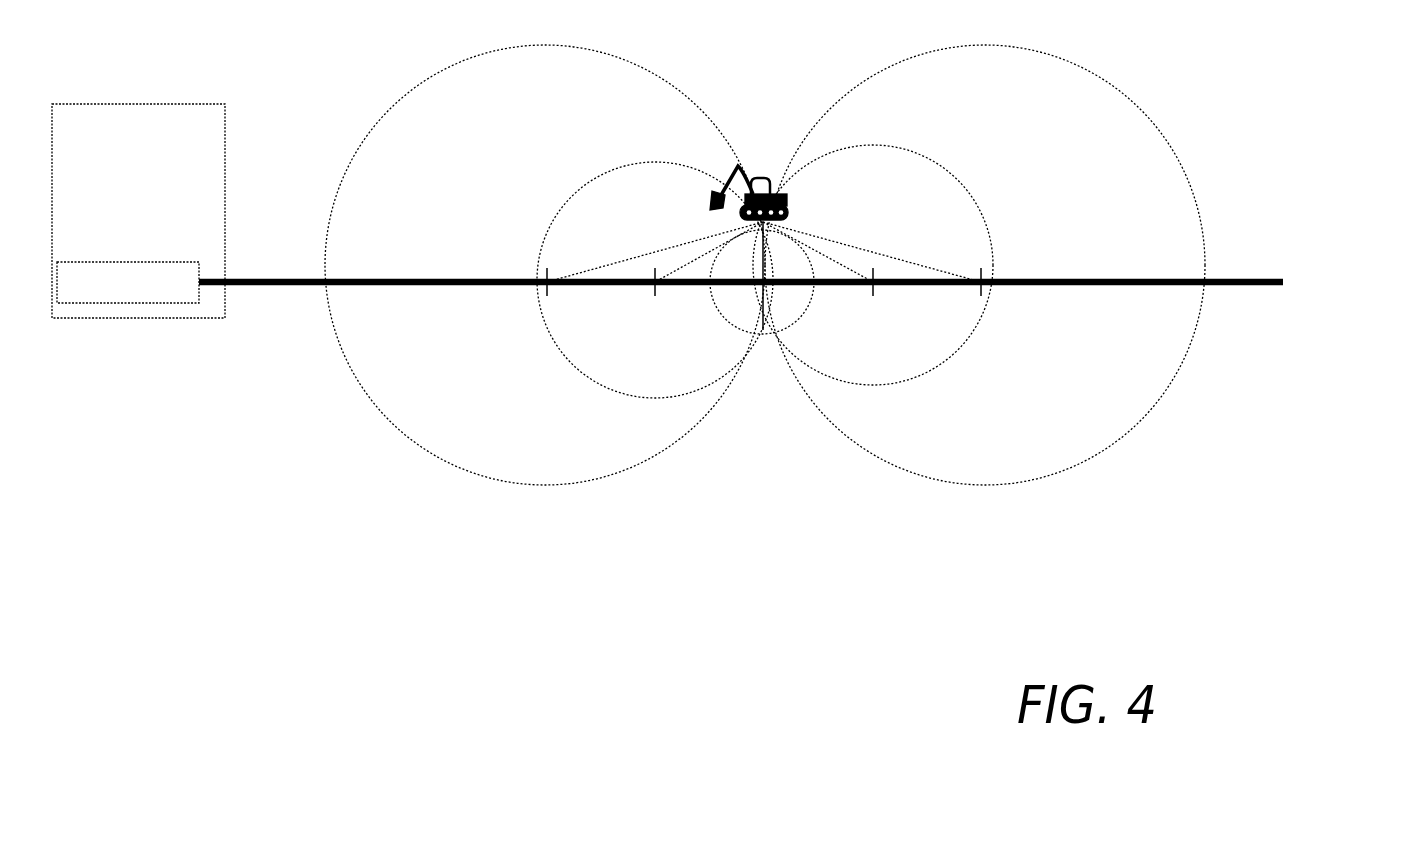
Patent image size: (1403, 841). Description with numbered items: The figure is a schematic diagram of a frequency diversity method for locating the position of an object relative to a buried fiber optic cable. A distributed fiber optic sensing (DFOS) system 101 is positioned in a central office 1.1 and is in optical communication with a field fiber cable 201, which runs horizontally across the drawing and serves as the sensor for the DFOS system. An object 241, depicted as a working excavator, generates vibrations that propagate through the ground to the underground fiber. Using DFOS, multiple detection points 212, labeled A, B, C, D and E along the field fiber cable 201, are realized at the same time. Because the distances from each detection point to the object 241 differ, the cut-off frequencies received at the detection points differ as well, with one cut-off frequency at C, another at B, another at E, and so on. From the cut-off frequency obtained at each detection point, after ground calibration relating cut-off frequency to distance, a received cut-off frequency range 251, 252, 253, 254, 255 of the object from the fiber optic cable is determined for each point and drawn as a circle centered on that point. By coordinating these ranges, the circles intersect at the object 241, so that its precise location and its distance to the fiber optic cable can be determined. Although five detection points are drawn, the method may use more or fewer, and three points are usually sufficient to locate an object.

The central office 1.1 is at (138, 211).
The distributed fiber optic sensing (DFOS) system 101 is at (128, 282).
The field fiber cable 201 is at (278, 287).
The multiple detection points 212 is at (764, 284).
The object 241 is at (755, 180).
The received cut-off frequency range 251 is at (810, 300).
The received cut-off frequency range 252 is at (570, 368).
The received cut-off frequency range 253 is at (336, 332).
The received cut-off frequency range 254 is at (1070, 269).
The received cut-off frequency range 255 is at (1237, 345).